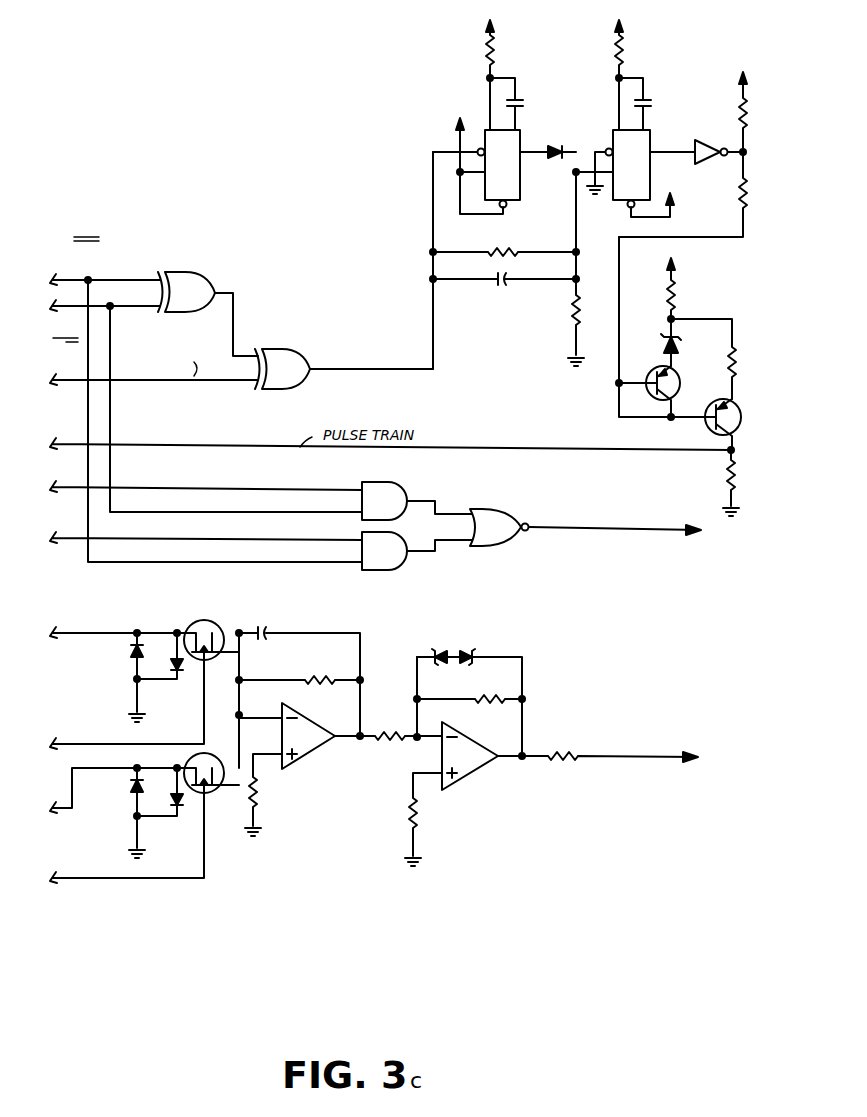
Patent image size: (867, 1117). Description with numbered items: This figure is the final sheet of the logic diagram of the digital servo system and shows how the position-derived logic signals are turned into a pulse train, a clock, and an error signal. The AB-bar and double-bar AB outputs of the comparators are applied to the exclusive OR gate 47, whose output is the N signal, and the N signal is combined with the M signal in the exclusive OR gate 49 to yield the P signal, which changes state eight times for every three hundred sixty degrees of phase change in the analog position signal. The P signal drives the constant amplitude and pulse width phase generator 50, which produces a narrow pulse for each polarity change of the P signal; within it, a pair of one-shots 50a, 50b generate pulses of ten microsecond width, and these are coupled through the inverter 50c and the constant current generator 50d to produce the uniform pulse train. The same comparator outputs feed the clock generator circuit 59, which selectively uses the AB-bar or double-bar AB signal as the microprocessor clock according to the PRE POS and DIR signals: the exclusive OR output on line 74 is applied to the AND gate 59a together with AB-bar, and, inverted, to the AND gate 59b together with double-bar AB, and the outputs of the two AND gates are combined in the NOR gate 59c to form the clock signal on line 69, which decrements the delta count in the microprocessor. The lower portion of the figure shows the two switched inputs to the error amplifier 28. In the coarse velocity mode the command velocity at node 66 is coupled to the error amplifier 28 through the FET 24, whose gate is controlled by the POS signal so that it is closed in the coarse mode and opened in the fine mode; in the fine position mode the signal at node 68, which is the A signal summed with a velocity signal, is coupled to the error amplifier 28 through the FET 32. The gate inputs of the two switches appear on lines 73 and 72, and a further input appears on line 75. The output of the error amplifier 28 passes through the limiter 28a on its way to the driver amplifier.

The exclusive OR gate 47 is at (187, 272).
The exclusive OR gate 49 is at (285, 348).
The constant amplitude and pulse width phase generator 50 is at (537, 337).
The one-shot 50a is at (519, 133).
The one-shot 50b is at (649, 131).
The inverter 50c is at (707, 170).
The constant current generator 50d is at (697, 443).
The clock generator circuit 59 is at (450, 526).
The AND gate 59a is at (402, 482).
The AND gate 59b is at (398, 571).
The NOR gate 59c is at (500, 547).
The clock signal line 69 is at (632, 534).
The line 74 is at (72, 491).
The input line 75 is at (72, 542).
The node 68 is at (75, 633).
The input line 73 is at (78, 744).
The node 66 is at (100, 770).
The input line 72 is at (107, 880).
The FET 32 is at (208, 622).
The FET switch 24 is at (222, 795).
The error amplifier 28 is at (309, 752).
The limiter 28a is at (478, 770).